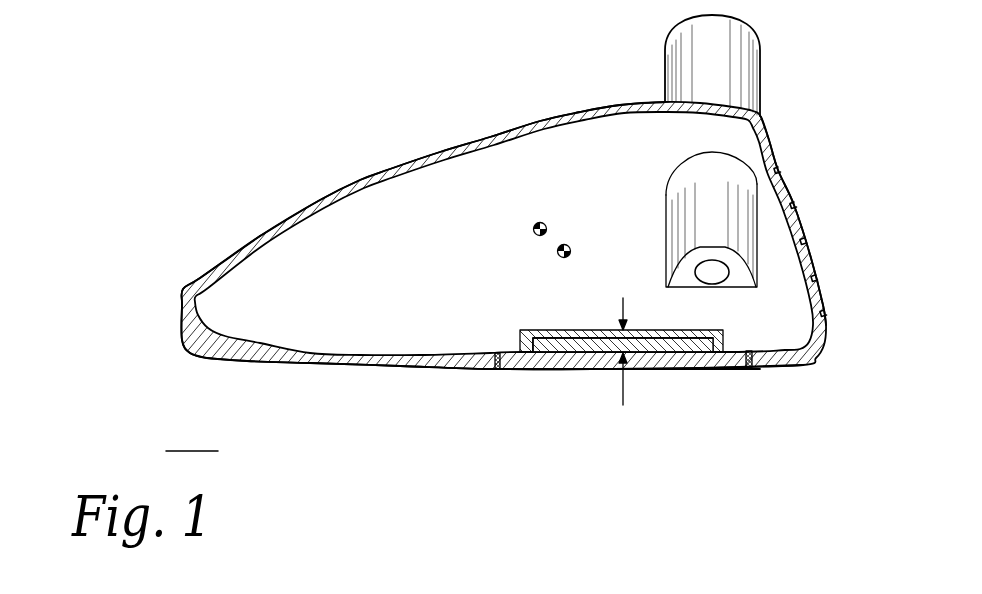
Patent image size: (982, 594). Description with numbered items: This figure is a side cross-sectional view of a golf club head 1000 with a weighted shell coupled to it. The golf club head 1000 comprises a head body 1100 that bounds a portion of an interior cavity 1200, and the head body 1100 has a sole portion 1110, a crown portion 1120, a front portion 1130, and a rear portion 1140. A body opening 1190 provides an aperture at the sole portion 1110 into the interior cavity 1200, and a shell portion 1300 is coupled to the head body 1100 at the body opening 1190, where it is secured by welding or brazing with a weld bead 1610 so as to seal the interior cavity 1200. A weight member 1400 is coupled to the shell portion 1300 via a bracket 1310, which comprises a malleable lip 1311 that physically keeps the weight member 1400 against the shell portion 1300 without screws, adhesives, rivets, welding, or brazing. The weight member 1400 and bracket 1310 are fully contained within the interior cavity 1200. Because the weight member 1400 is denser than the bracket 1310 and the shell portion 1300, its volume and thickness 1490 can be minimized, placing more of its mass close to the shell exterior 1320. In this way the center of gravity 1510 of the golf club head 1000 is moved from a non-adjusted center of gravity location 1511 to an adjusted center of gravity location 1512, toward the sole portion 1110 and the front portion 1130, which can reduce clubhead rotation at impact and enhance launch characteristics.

The golf club head 1000 is at (479, 238).
The head body 1100 is at (277, 220).
The sole portion 1110 is at (383, 360).
The crown portion 1120 is at (540, 121).
The front portion 1130 is at (801, 193).
The rear portion 1140 is at (162, 304).
The body opening 1190 is at (509, 402).
The interior cavity 1200 is at (384, 199).
The shell portion 1300 is at (597, 359).
The bracket 1310 is at (522, 345).
The malleable lip 1311 is at (534, 337).
The shell exterior 1320 is at (655, 362).
The weight member 1400 is at (666, 338).
The thickness 1490 is at (620, 365).
The center of gravity 1510 is at (552, 224).
The non-adjusted center of gravity location 1511 is at (534, 226).
The adjusted center of gravity location 1512 is at (570, 255).
The weld bead 1610 is at (497, 370).